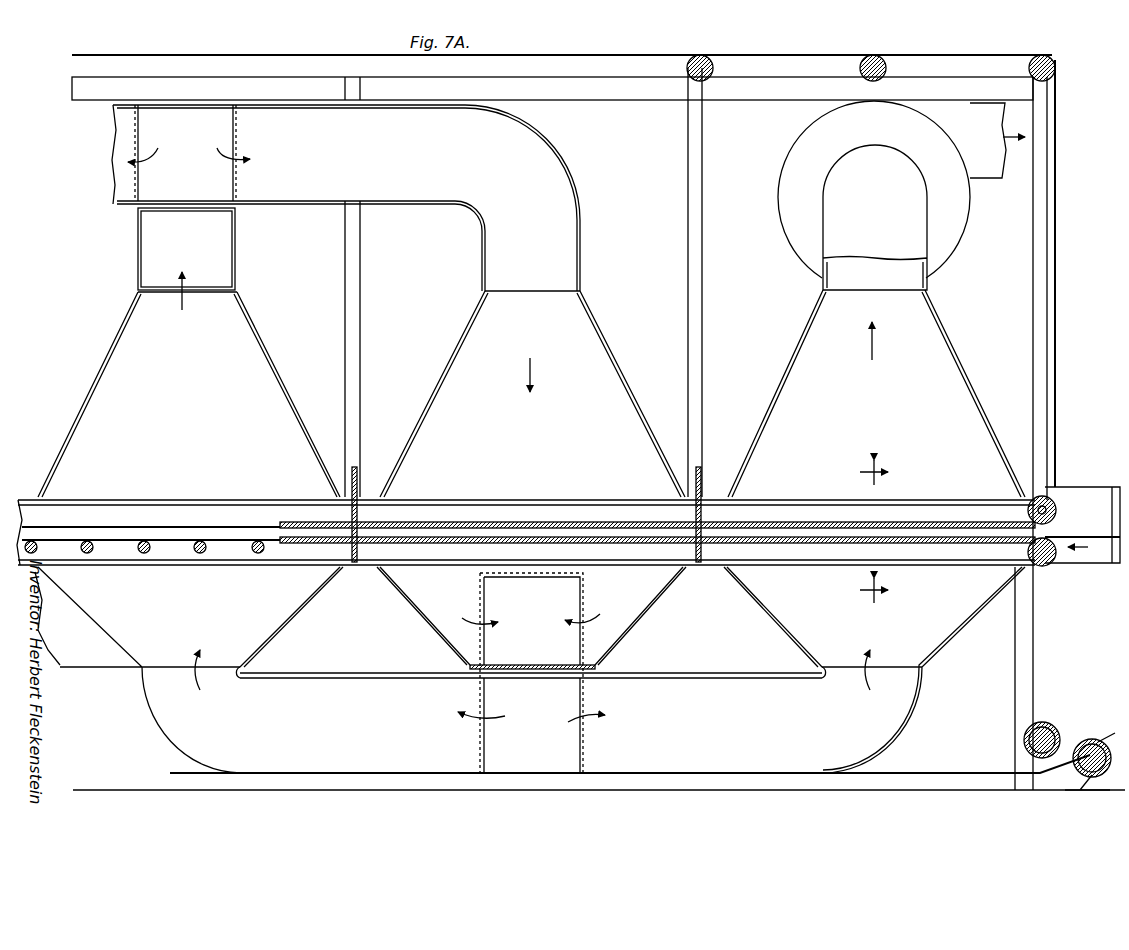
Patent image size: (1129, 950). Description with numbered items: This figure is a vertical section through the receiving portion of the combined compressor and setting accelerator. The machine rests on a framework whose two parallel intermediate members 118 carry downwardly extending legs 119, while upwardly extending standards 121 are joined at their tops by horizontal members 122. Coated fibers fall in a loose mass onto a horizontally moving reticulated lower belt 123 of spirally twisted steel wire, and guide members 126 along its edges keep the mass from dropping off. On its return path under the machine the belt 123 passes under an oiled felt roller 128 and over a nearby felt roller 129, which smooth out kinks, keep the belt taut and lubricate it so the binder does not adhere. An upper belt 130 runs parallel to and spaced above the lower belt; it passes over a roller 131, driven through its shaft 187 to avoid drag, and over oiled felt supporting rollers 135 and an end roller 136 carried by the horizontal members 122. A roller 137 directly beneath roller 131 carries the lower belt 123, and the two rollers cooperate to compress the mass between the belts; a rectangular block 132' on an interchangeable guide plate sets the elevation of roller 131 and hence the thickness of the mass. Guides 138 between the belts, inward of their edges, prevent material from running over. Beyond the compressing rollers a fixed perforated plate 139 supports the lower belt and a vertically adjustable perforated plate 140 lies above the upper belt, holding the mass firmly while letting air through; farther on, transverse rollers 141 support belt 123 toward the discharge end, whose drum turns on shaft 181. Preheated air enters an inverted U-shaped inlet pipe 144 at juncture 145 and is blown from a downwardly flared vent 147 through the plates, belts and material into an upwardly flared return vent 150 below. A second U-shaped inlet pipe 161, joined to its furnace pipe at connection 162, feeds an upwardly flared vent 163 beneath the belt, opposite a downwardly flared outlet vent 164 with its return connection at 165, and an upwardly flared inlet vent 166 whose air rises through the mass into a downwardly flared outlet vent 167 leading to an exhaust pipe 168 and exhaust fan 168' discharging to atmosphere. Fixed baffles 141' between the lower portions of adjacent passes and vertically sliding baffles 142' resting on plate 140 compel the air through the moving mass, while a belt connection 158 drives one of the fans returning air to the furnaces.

The intermediate members 118 is at (106, 512).
The legs 119 is at (1020, 648).
The standards 121 is at (690, 270).
The horizontal members 122 is at (640, 90).
The reticulated belt 123 is at (147, 553).
The guide members 126 is at (1080, 487).
The roller 128 is at (1024, 735).
The roller 129 is at (1090, 738).
The upper belt 130 is at (175, 535).
The roller 131 is at (1028, 509).
The rectangular block 132' is at (1082, 531).
The supporting rollers 135 is at (701, 56).
The end roller 136 is at (1042, 56).
The roller 137 is at (1055, 560).
The guides 138 is at (576, 535).
The perforated plate 139 is at (968, 545).
The perforated plate 140 is at (950, 520).
The rollers 141 is at (144, 565).
The baffles 141' is at (557, 552).
The baffles 142' is at (488, 508).
The inlet pipe 144 is at (305, 185).
The juncture 145 is at (215, 183).
The vent 147 is at (595, 345).
The vent 150 is at (633, 607).
The belt connection 158 is at (535, 647).
The inlet pipe 161 is at (695, 690).
The connection 162 is at (492, 740).
The vent 163 is at (265, 617).
The outlet vent 164 is at (125, 340).
The connection 165 is at (150, 248).
The inlet vent 166 is at (790, 620).
The outlet vent 167 is at (808, 345).
The exhaust pipe 168 is at (849, 222).
The exhaust fan 168' is at (872, 189).
The shaft 181 is at (362, 243).
The shaft 187 is at (1057, 508).